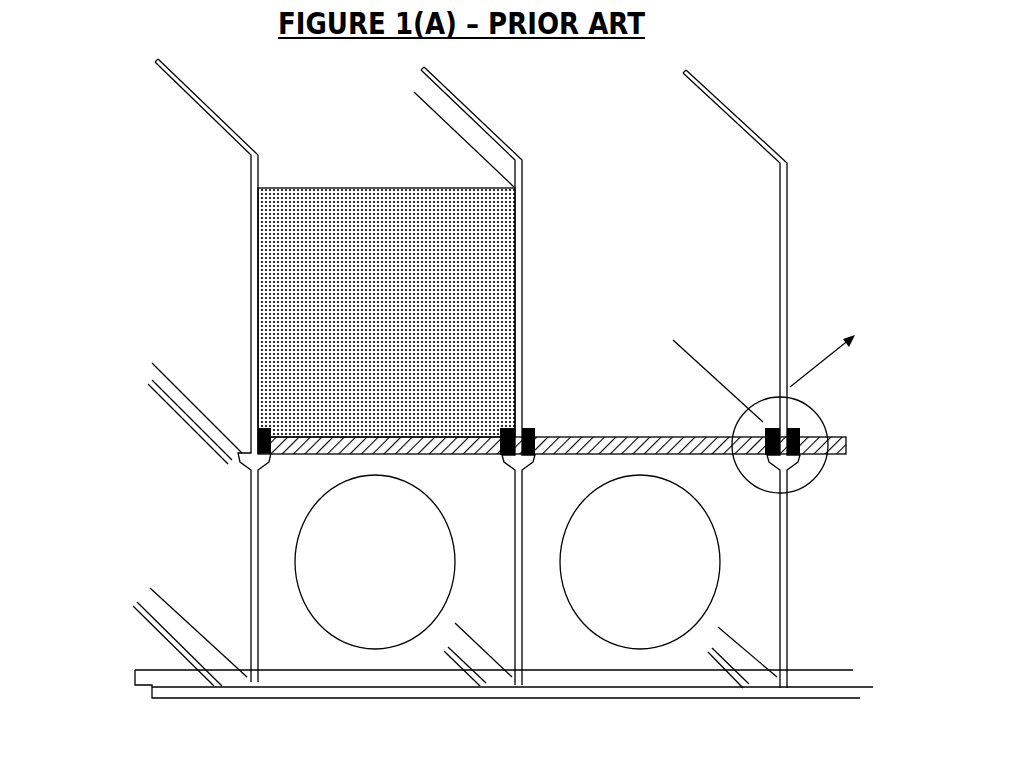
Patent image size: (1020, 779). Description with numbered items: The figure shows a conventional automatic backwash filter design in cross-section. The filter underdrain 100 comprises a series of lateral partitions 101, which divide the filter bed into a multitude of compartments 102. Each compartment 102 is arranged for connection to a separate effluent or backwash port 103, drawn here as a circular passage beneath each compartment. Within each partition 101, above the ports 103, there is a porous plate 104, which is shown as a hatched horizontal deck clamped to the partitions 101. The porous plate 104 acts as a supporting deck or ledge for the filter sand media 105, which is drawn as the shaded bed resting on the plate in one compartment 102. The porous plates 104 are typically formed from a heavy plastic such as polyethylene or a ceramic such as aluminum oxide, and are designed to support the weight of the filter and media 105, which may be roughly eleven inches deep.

The filter underdrain 100 is at (142, 252).
The lateral partition 101 is at (790, 183).
The compartment 102 is at (659, 230).
The effluent or backwash port 103 is at (330, 567).
The porous plate 104 is at (633, 438).
The filter sand media 105 is at (395, 275).